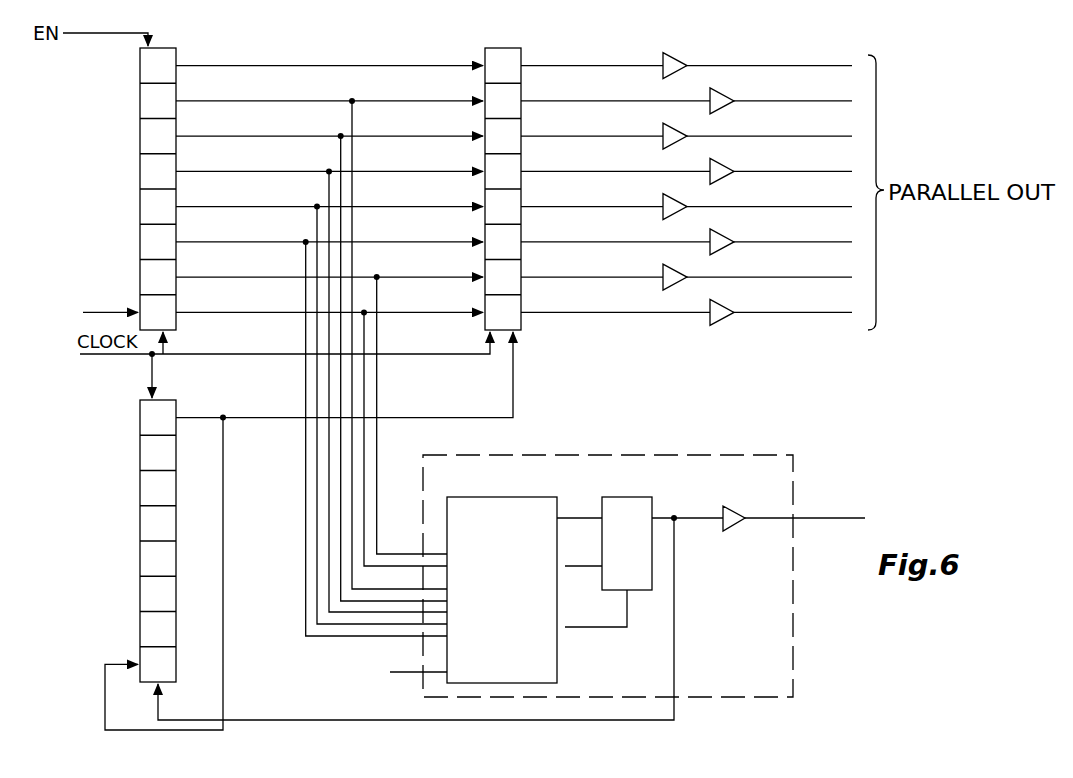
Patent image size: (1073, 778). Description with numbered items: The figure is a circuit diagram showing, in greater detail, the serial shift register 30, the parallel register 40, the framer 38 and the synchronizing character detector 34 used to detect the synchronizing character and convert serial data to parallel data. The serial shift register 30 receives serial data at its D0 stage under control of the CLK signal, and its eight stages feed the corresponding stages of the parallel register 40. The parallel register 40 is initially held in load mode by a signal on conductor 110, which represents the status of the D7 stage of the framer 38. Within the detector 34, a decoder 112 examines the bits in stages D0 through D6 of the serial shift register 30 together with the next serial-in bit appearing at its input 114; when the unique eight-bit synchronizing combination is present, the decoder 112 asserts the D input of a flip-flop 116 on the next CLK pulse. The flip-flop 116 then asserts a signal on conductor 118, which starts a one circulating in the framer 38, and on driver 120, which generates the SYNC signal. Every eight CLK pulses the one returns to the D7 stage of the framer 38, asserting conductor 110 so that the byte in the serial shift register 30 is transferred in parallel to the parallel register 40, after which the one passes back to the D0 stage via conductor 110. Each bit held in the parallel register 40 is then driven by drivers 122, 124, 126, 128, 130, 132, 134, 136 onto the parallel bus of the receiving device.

The serial shift register 30 is at (167, 46).
The parallel register 40 is at (503, 46).
The framer 38 is at (140, 420).
The synchronizing character detector 34 is at (665, 455).
The conductor 110 is at (265, 417).
The decoder 112 is at (495, 497).
The input of the decoder 114 is at (97, 318).
The flip-flop 116 is at (622, 497).
The conductor 118 is at (674, 605).
The driver 120 is at (763, 492).
The driver 122 is at (683, 55).
The driver 124 is at (728, 99).
The driver 126 is at (663, 129).
The driver 128 is at (722, 169).
The driver 130 is at (663, 200).
The driver 132 is at (722, 240).
The driver 134 is at (663, 270).
The driver 136 is at (722, 310).